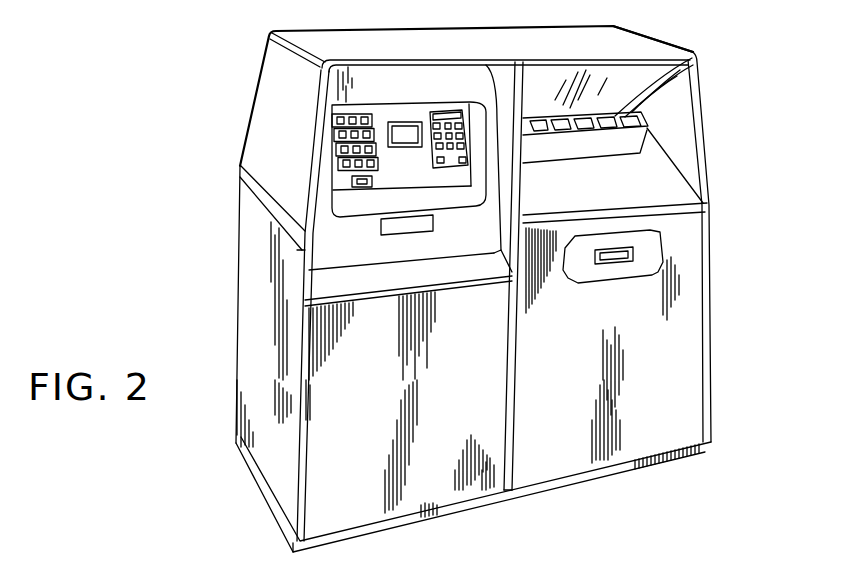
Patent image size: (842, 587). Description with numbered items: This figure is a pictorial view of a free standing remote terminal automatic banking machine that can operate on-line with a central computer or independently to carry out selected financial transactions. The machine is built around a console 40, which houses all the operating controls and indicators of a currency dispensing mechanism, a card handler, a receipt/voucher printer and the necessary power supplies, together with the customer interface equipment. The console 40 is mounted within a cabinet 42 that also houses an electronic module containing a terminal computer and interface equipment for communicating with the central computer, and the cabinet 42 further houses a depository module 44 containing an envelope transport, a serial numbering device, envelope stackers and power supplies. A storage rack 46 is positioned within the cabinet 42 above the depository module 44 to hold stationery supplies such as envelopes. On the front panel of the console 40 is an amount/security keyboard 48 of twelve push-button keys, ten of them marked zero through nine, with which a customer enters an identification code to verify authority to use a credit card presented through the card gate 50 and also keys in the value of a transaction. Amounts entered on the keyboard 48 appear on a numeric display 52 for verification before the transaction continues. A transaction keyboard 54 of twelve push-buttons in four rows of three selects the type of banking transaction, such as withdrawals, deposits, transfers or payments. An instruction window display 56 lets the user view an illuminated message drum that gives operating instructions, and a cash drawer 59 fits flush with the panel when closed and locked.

The console 40 is at (343, 83).
The cabinet 42 is at (272, 110).
The depository module 44 is at (647, 248).
The storage rack 46 is at (618, 147).
The amount/security keyboard 48 is at (455, 132).
The card gate 50 is at (372, 182).
The numeric display 52 is at (438, 116).
The transaction keyboard 54 is at (343, 138).
The instruction window display 56 is at (410, 127).
The cash drawer 59 is at (408, 227).